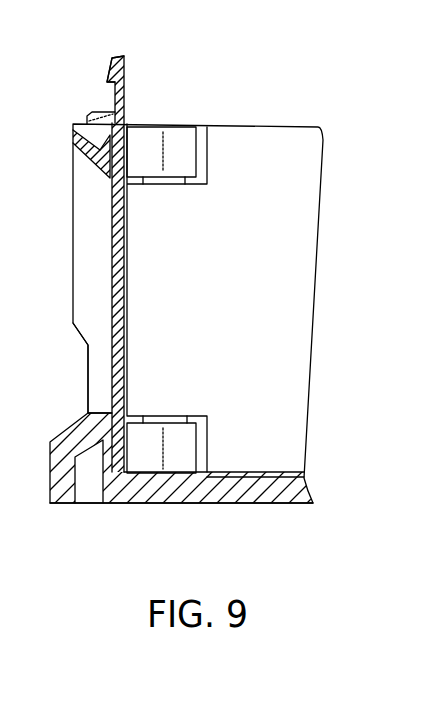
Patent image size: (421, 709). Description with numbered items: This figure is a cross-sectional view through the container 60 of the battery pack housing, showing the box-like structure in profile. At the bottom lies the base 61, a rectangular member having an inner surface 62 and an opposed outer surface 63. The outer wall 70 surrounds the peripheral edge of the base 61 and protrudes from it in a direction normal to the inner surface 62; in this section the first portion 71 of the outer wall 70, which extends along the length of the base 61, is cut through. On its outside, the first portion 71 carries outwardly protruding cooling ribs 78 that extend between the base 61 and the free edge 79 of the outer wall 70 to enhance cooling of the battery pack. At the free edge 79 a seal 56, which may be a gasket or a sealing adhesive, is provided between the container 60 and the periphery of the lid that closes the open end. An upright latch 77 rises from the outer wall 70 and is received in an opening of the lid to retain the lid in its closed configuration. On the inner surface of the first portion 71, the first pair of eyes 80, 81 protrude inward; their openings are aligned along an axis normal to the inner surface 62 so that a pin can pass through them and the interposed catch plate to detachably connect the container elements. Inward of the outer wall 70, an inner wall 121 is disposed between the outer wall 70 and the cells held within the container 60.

The container 60 is at (281, 99).
The seal 56 is at (75, 147).
The base 61 is at (147, 490).
The inner surface 62 is at (277, 477).
The outer surface 63 is at (215, 503).
The outer wall 70 is at (210, 300).
The first portion 71 is at (118, 228).
The upright latches 77 is at (119, 74).
The cooling ribs 78 is at (92, 293).
The free edge 79 is at (80, 121).
The eye 80 is at (178, 134).
The eye 81 is at (183, 443).
The inner wall 121 is at (252, 319).